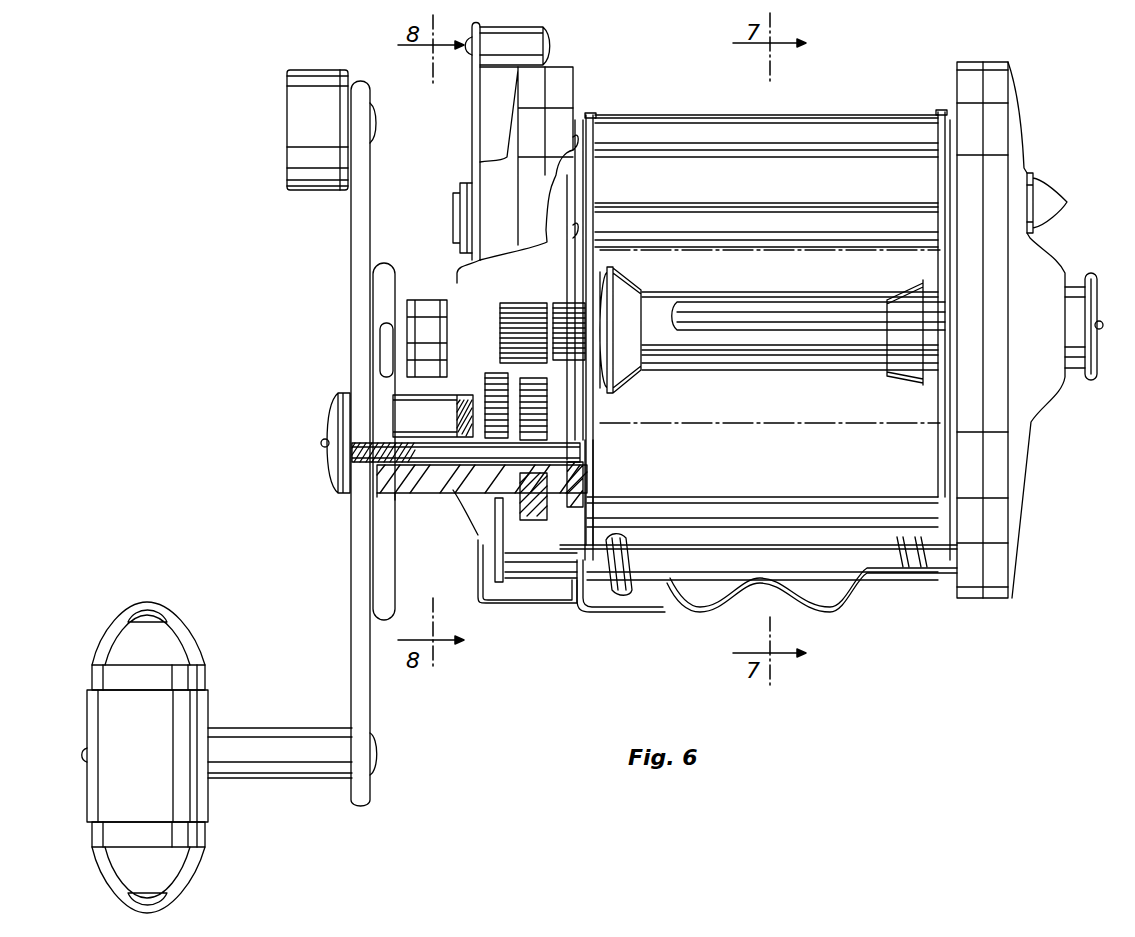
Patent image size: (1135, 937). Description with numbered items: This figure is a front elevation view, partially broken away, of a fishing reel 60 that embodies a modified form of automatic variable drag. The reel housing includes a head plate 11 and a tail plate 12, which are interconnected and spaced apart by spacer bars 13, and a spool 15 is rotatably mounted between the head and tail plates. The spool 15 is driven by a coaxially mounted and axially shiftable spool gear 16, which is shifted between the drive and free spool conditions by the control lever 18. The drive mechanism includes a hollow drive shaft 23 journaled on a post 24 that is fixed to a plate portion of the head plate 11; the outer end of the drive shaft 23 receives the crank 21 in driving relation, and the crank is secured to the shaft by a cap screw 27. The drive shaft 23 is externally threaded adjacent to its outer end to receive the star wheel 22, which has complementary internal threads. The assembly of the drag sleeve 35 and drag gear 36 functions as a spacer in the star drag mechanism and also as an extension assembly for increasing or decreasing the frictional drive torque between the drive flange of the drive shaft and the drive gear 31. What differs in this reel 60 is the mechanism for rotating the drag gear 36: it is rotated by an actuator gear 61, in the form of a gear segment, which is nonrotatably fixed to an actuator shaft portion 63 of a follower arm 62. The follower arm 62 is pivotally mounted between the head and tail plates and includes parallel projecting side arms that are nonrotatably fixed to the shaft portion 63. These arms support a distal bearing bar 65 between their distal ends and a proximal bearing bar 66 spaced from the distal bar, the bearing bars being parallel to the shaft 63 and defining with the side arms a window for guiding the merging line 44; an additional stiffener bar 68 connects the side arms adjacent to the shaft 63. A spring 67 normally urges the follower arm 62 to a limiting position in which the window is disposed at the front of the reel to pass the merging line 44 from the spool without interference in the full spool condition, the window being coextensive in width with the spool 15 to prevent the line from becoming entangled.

The head plate 11 is at (582, 66).
The tail plate 12 is at (1026, 103).
The spacer bars 13 is at (820, 300).
The spool 15 is at (933, 445).
The spool gear 16 is at (500, 313).
The control lever 18 is at (470, 100).
The crank 21 is at (278, 738).
The star wheel 22 is at (382, 547).
The drive shaft 23 is at (410, 470).
The post 24 is at (575, 455).
The cap screw 27 is at (330, 415).
The drive gear 31 is at (532, 510).
The drag sleeve 35 is at (440, 490).
The drag gear 36 is at (495, 375).
The spool axis 44 is at (770, 423).
The reel 60 is at (338, 258).
The actuator gear 61 is at (497, 533).
The follower arm 62 is at (758, 340).
The actuator shaft portion 63 is at (767, 560).
The distal bearing bar 65 is at (700, 125).
The proximal bearing bar 66 is at (740, 212).
The spring 67 is at (620, 600).
The stiffener bar 68 is at (852, 508).